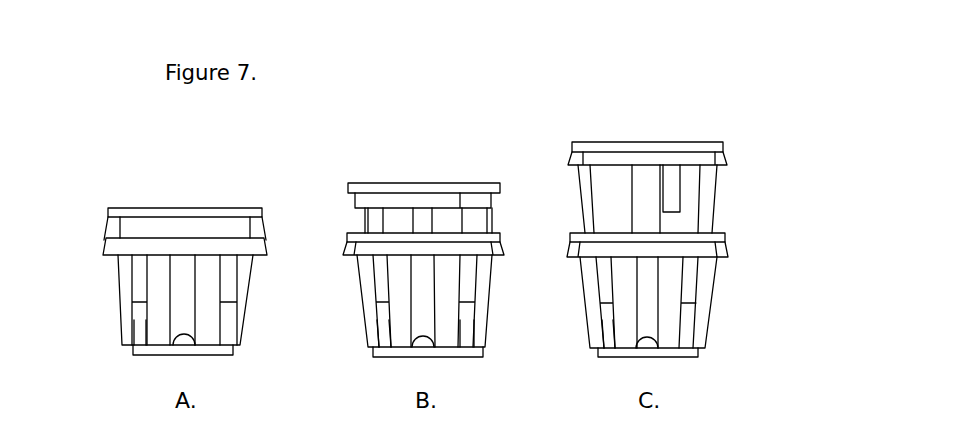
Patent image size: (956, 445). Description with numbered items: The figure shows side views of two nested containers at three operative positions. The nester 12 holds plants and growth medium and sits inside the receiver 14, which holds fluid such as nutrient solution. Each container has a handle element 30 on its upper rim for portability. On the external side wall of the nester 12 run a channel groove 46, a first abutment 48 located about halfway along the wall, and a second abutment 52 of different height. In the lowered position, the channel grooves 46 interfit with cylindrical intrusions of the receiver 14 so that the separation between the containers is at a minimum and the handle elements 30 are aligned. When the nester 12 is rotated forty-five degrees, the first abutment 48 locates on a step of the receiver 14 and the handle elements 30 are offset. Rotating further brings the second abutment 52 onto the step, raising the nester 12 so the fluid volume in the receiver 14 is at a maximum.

The nester 12 is at (183, 208).
The receiver 14 is at (363, 298).
The handle element 30 is at (253, 220).
The channel groove 46 is at (423, 327).
The first abutment 48 is at (132, 274).
The second abutment 52 is at (160, 335).